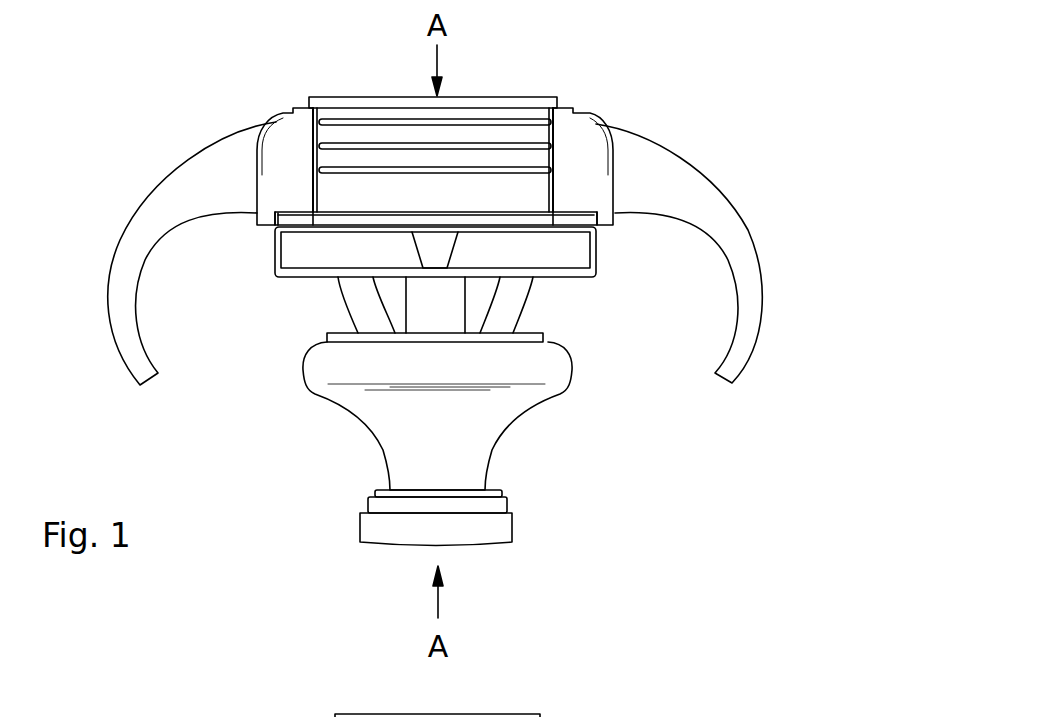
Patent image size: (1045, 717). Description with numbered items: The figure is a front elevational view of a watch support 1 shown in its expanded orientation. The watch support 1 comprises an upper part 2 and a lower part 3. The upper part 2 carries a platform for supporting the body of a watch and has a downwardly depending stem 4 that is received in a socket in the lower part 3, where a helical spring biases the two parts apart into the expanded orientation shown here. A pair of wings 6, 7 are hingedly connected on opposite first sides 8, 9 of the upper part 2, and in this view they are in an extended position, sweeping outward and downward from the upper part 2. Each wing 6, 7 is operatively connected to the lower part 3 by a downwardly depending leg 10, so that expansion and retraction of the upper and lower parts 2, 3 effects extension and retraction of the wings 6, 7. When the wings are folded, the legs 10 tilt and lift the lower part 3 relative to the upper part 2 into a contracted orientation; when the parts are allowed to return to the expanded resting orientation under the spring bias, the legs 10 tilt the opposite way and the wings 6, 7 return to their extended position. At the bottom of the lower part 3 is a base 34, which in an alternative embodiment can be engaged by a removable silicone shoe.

The watch support 1 is at (643, 90).
The upper part 2 is at (497, 98).
The lower part 3 is at (362, 422).
The stem 4 is at (417, 318).
The wing 6 is at (137, 349).
The wing 7 is at (678, 171).
The first side 8 is at (272, 189).
The first side 9 is at (566, 188).
The leg 10 is at (362, 298).
The base 34 is at (502, 535).